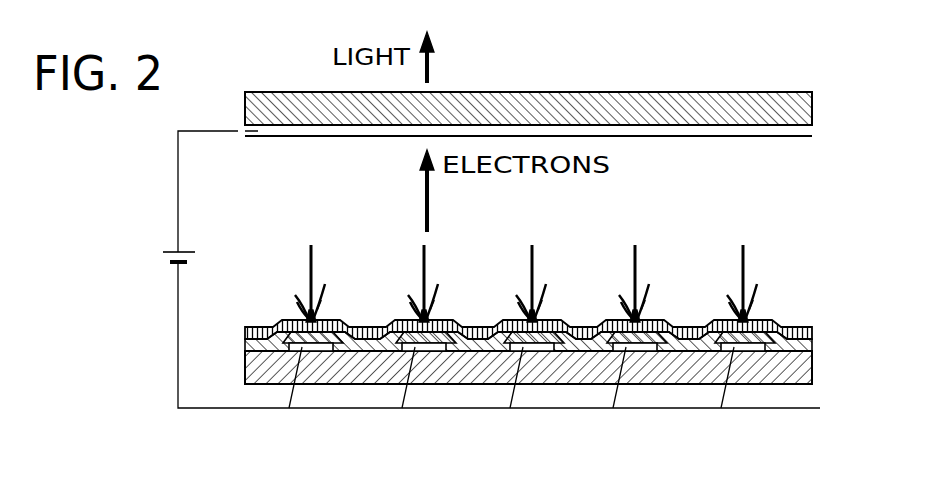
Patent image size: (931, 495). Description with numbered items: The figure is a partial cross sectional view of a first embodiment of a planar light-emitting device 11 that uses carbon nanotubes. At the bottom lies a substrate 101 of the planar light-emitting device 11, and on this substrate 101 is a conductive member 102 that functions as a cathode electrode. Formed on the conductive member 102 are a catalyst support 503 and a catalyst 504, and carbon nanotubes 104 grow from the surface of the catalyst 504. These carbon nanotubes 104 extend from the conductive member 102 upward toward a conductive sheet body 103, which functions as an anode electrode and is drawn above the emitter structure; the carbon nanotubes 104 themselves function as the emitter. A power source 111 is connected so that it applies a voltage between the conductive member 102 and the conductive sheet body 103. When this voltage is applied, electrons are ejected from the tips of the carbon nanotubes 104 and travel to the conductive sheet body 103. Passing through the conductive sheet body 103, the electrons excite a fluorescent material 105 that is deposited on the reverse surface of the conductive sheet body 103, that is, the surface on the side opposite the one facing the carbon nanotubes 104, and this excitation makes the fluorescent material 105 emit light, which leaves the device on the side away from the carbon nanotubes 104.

The planar light-emitting device 11 is at (680, 78).
The substrate 101 is at (498, 385).
The conductive member 102 is at (398, 340).
The conductive sheet body 103 is at (493, 130).
The carbon nanotubes 104 is at (432, 256).
The fluorescent material 105 is at (586, 102).
The power source 111 is at (186, 247).
The catalyst support 503 is at (402, 322).
The catalyst 504 is at (450, 318).